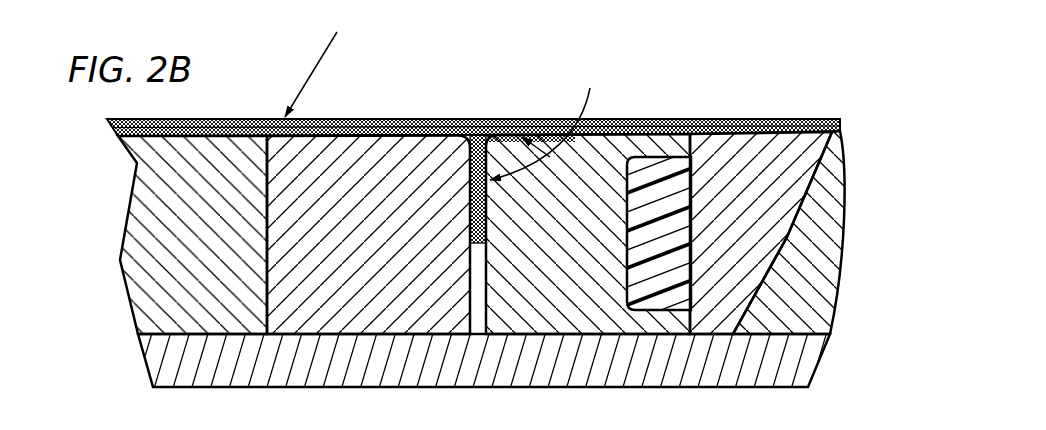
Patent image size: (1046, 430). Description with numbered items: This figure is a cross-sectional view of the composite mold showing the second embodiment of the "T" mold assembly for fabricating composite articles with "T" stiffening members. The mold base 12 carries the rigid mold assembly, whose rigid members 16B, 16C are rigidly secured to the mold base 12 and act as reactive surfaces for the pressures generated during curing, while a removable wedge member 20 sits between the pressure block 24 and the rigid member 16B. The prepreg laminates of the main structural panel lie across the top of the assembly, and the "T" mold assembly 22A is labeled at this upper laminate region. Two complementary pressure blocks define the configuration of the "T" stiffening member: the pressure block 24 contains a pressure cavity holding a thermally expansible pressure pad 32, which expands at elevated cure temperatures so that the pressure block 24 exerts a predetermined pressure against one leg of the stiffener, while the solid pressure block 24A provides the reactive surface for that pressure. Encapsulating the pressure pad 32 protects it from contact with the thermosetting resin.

The mold base 12 is at (445, 358).
The rigid member 16B is at (805, 300).
The rigid member 16C is at (153, 252).
The removable wedge member 20 is at (707, 312).
The "T" mold assembly 22A is at (493, 102).
The pressure block 24 is at (538, 308).
The solid pressure block 24A is at (330, 308).
The pressure pad 32 is at (643, 293).